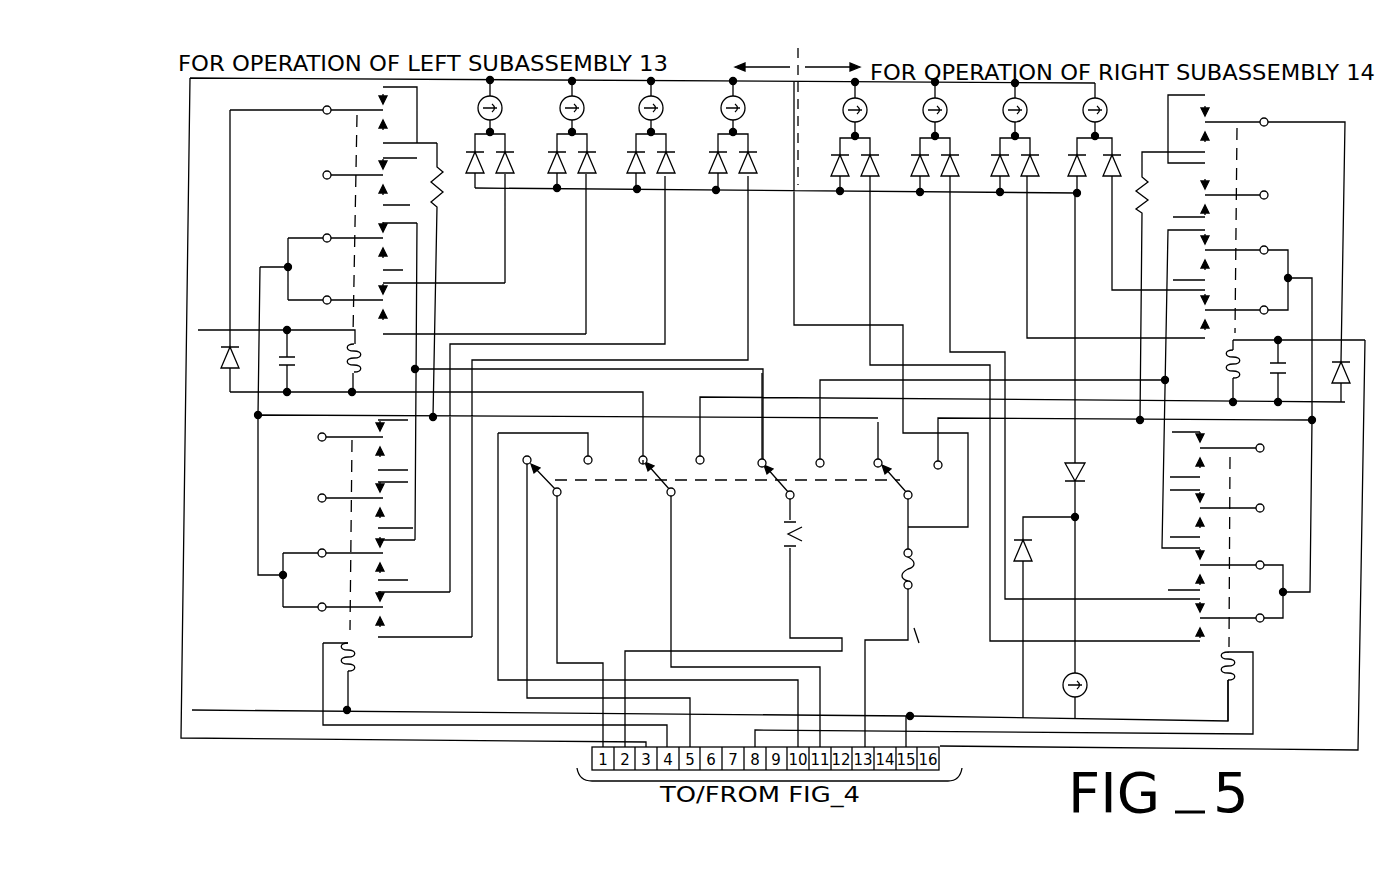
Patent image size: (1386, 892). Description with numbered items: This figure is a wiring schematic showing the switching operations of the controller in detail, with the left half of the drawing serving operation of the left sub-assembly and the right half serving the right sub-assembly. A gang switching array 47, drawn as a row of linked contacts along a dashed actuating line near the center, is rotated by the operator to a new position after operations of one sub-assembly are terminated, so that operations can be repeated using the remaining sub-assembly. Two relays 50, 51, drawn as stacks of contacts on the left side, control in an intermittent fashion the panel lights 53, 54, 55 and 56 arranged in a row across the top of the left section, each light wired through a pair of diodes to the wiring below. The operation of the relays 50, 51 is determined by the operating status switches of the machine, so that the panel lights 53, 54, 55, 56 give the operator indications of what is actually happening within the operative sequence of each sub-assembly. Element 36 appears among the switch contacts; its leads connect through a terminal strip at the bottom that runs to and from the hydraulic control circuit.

The thermal cutout element 36 is at (798, 541).
The gang switching array 47 is at (657, 488).
The relay 50 is at (323, 263).
The relay 51 is at (307, 578).
The panel light 53 is at (500, 102).
The panel light 54 is at (582, 102).
The panel light 55 is at (661, 102).
The panel light 56 is at (743, 102).